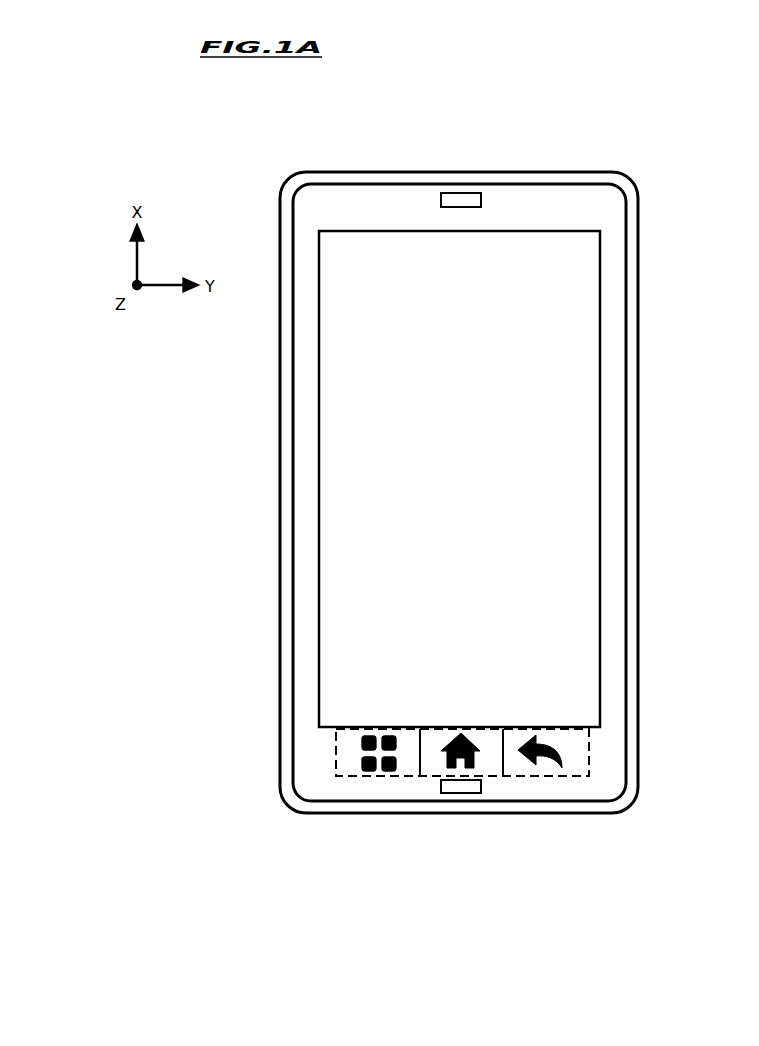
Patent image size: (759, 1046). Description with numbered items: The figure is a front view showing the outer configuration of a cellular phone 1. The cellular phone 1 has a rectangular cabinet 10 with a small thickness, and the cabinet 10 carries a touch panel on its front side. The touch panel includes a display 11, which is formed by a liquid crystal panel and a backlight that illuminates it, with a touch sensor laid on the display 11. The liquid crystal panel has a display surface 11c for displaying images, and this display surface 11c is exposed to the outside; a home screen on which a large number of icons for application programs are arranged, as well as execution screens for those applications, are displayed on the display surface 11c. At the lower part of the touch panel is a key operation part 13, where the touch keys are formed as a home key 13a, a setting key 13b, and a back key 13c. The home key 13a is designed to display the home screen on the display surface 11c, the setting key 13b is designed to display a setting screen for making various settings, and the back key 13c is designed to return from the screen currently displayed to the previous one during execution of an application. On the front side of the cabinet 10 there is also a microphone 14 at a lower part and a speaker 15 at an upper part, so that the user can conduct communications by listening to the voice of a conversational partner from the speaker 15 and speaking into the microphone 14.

The cellular phone 1 is at (510, 443).
The cabinet 10 is at (639, 467).
The display 11 is at (600, 352).
The display surface 11c is at (343, 315).
The key operation part 13 is at (527, 785).
The home key 13a is at (380, 776).
The setting key 13b is at (478, 760).
The back key 13c is at (553, 772).
The microphone 14 is at (462, 793).
The speaker 15 is at (465, 193).